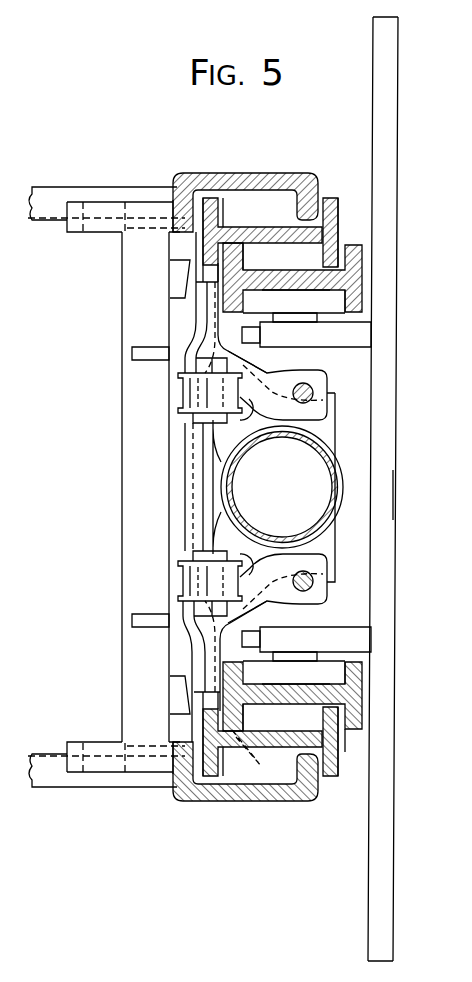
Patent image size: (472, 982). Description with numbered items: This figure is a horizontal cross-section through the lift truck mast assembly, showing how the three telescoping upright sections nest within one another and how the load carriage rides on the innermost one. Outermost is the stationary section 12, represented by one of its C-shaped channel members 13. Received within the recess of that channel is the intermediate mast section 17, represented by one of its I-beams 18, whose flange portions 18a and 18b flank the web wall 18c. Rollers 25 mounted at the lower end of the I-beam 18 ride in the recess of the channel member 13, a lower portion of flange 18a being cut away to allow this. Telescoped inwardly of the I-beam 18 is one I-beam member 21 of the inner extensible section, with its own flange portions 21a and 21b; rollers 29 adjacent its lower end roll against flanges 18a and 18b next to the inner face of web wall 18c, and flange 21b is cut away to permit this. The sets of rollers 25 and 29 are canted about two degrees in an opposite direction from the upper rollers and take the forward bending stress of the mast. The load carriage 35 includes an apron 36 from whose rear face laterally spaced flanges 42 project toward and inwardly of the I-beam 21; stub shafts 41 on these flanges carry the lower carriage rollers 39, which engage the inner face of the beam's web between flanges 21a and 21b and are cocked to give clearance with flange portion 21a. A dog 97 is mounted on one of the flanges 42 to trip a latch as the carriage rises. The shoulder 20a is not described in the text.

The stationary section 12 is at (224, 174).
The channel members 13 is at (200, 172).
The intermediate mast section 17 is at (334, 197).
The I-beams 18 is at (303, 205).
The flange portion 18a is at (340, 213).
The flange portion 18b is at (205, 205).
The web wall 18c is at (260, 768).
The shoulder 20a is at (363, 731).
The I-beam members 21 is at (355, 275).
The flange portion 21a is at (360, 290).
The flange portion 21b is at (235, 283).
The rollers 25 is at (277, 198).
The rollers 29 is at (312, 254).
The load carriage 35 is at (392, 495).
The apron 36 is at (384, 449).
The rollers 39 is at (327, 300).
The stub shafts 41 is at (298, 318).
The flanges 42 is at (357, 340).
The dog 97 is at (248, 340).